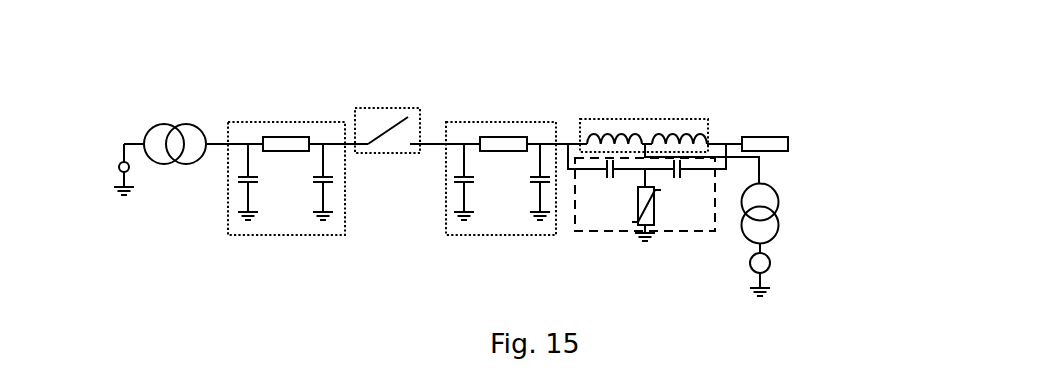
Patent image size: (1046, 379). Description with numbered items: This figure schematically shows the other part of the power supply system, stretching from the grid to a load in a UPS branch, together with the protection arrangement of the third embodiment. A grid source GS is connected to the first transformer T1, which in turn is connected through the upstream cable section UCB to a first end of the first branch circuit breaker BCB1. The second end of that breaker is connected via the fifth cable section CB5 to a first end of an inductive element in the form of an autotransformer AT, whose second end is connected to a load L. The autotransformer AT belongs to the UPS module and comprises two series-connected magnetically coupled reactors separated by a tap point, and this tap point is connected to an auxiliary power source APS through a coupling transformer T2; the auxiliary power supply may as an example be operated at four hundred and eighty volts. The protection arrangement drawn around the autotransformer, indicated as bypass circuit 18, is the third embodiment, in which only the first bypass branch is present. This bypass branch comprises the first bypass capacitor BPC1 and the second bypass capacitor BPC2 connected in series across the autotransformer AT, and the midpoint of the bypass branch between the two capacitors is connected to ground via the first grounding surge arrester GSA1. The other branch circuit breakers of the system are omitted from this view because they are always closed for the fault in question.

The grid source GS is at (108, 166).
The first transformer T1 is at (175, 127).
The upstream cable section UCB is at (286, 160).
The first branch circuit breaker BCB1 is at (386, 116).
The fifth cable section CB5 is at (501, 163).
The bypass circuit 18 is at (574, 158).
The autotransformer AT is at (669, 136).
The load L is at (765, 131).
The coupling transformer T2 is at (781, 214).
The auxiliary power source APS is at (792, 270).
The first bypass capacitor BPC1 is at (608, 177).
The first grounding surge arrester GSA1 is at (637, 233).
The second bypass capacitor BPC2 is at (685, 180).